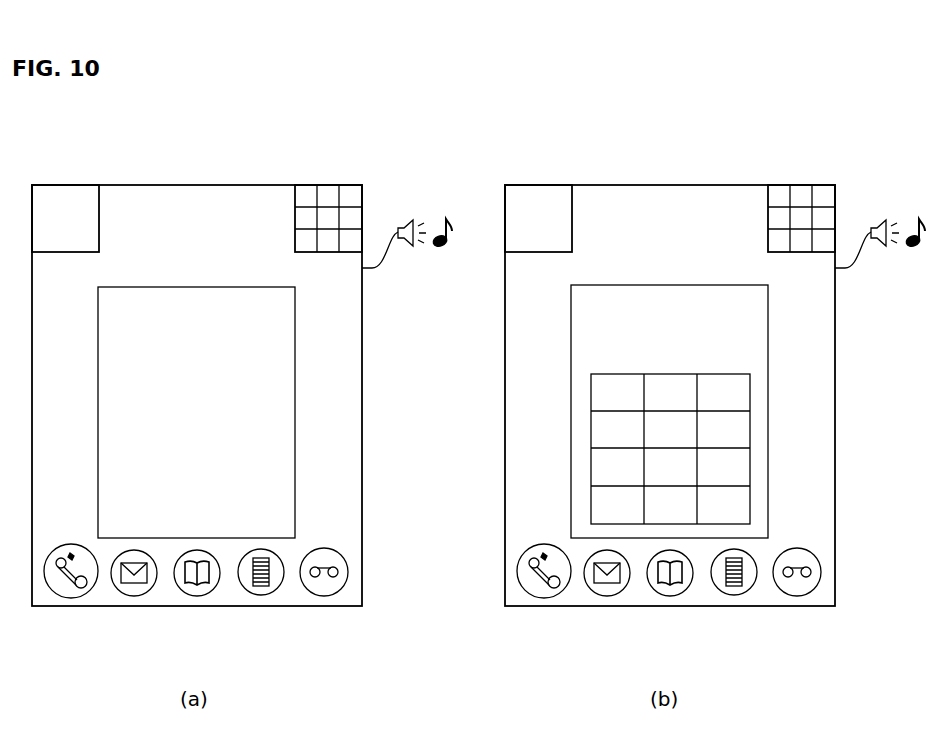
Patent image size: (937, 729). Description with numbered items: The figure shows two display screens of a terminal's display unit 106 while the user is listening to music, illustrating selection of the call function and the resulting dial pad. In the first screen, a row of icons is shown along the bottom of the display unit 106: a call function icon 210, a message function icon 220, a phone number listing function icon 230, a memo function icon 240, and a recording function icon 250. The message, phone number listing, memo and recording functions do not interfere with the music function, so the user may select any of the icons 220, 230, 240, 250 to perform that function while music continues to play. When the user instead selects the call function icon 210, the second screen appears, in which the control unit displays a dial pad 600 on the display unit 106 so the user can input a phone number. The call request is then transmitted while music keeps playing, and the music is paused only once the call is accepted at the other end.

The display unit 106 is at (362, 418).
The call function icon 210 is at (70, 599).
The message function icon 220 is at (134, 597).
The phone number listing function icon 230 is at (197, 597).
The memo function icon 240 is at (261, 596).
The recording function icon 250 is at (324, 597).
The dial pad 600 is at (768, 346).